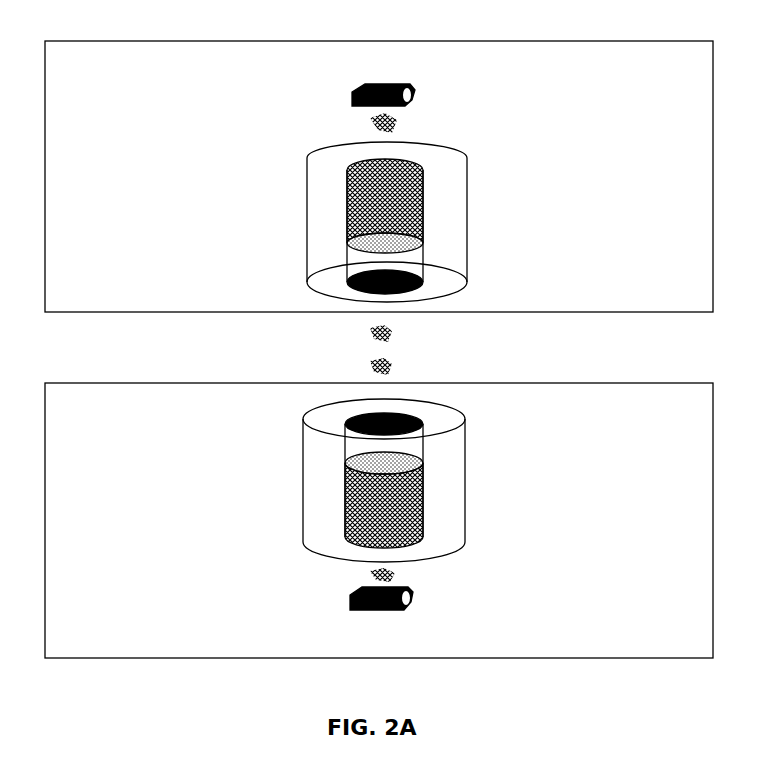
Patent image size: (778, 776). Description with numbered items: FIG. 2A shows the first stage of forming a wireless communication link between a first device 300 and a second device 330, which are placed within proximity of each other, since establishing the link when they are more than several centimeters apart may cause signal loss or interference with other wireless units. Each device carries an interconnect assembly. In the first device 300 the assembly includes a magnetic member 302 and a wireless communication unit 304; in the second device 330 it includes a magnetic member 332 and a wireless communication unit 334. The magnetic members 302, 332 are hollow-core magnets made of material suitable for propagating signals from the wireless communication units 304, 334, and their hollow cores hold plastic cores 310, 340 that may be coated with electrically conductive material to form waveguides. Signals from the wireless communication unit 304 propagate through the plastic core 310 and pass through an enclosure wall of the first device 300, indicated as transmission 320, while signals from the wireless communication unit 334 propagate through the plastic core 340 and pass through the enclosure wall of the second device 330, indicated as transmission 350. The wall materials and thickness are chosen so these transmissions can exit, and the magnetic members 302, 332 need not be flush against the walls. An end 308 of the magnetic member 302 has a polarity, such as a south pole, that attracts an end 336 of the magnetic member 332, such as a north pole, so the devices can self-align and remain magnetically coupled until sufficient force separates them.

The first device 300 is at (683, 293).
The magnetic member 302 is at (307, 210).
The wireless communication unit 304 is at (398, 84).
The end of magnet 308 is at (320, 290).
The plastic core 310 is at (423, 207).
The transmission 320 is at (394, 330).
The second device 330 is at (683, 643).
The magnetic member 332 is at (303, 525).
The wireless communication unit 334 is at (356, 612).
The end of magnet 336 is at (320, 410).
The plastic core 340 is at (423, 508).
The transmission 350 is at (394, 368).